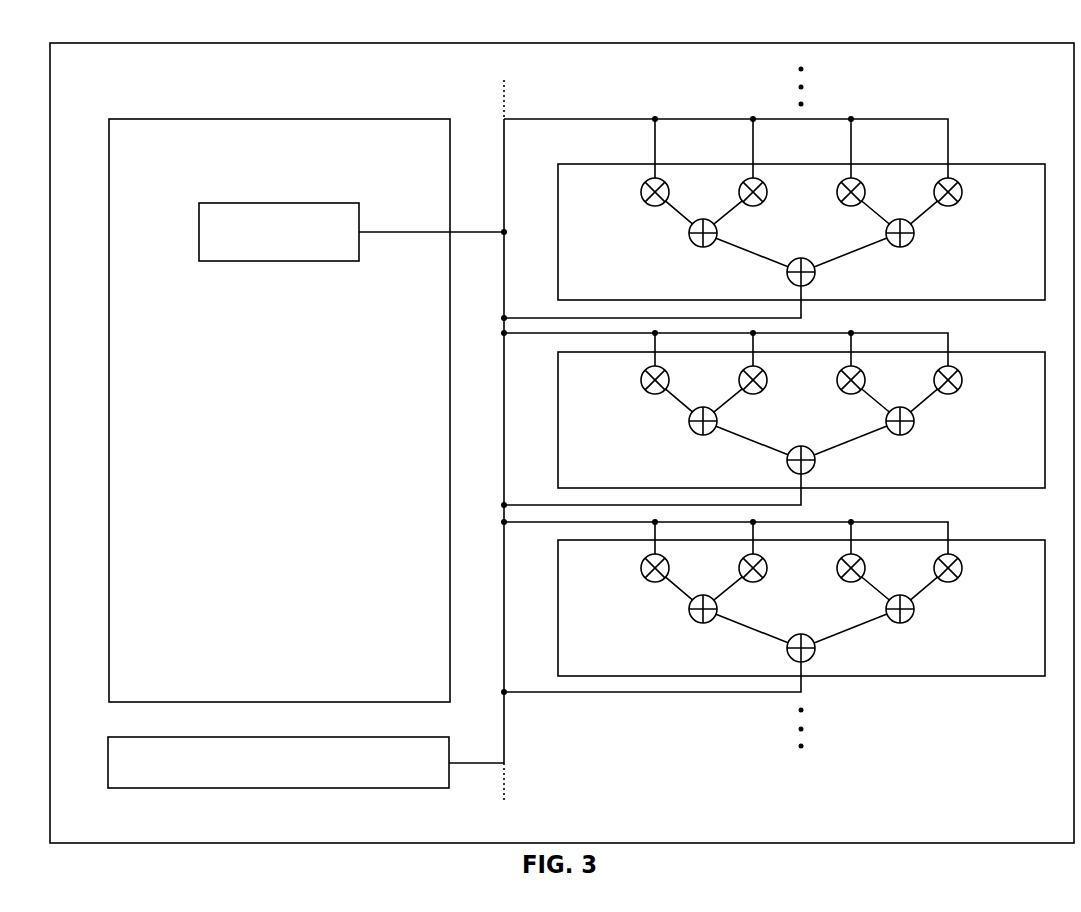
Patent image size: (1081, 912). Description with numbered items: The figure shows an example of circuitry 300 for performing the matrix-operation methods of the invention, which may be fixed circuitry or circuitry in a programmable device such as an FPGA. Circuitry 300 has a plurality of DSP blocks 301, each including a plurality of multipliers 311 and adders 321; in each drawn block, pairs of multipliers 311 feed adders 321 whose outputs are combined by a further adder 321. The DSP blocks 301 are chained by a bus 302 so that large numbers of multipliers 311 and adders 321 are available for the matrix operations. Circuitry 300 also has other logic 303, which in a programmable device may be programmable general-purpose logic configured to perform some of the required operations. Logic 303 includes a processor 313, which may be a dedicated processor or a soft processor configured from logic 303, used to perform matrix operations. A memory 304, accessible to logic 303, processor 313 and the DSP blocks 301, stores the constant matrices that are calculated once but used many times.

The circuitry 300 is at (112, 43).
The DSP block 301 is at (985, 164).
The bus 302 is at (502, 142).
The logic 303 is at (172, 119).
The memory 304 is at (170, 737).
The multiplier 311 is at (810, 355).
The processor 313 is at (262, 203).
The adder 321 is at (802, 431).